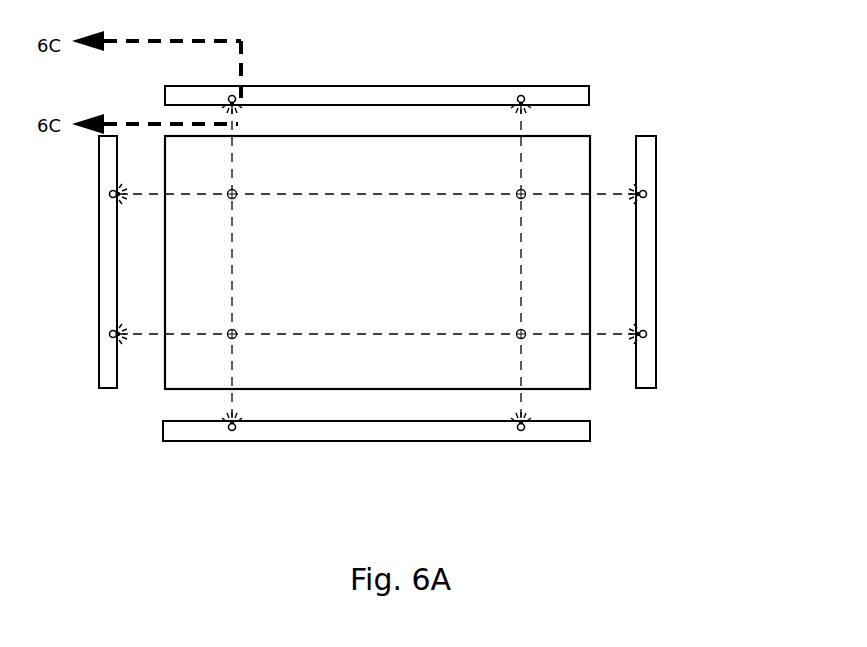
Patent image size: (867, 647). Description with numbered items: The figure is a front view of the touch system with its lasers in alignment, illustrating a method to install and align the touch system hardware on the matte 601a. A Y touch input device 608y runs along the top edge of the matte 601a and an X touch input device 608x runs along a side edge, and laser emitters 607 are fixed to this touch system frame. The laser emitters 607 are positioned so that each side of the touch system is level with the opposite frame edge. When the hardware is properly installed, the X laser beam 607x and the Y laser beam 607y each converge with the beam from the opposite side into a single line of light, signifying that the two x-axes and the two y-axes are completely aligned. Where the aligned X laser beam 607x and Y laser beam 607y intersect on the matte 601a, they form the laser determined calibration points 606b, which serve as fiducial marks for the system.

The matte 601a is at (373, 389).
The laser determined calibration points 606b is at (525, 338).
The laser emitter 607 is at (235, 430).
The X laser beam 607x is at (157, 334).
The Y laser beam 607y is at (522, 160).
The X touch input device 608x is at (644, 220).
The Y touch input device 608y is at (361, 88).